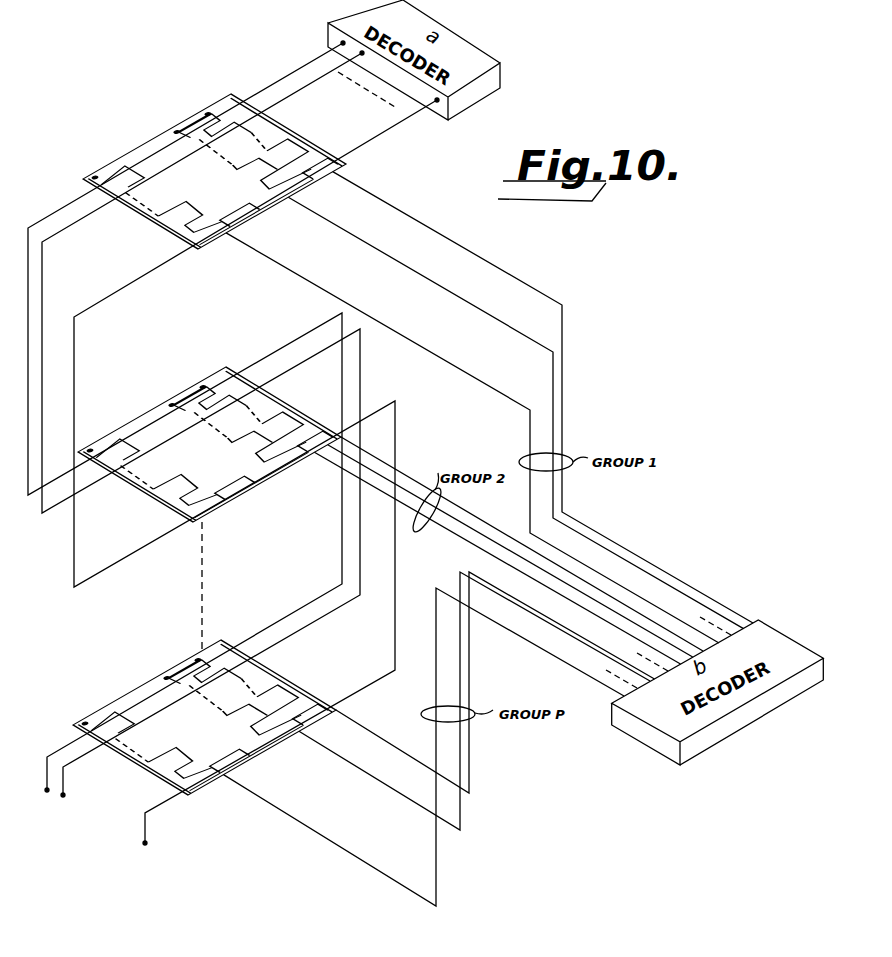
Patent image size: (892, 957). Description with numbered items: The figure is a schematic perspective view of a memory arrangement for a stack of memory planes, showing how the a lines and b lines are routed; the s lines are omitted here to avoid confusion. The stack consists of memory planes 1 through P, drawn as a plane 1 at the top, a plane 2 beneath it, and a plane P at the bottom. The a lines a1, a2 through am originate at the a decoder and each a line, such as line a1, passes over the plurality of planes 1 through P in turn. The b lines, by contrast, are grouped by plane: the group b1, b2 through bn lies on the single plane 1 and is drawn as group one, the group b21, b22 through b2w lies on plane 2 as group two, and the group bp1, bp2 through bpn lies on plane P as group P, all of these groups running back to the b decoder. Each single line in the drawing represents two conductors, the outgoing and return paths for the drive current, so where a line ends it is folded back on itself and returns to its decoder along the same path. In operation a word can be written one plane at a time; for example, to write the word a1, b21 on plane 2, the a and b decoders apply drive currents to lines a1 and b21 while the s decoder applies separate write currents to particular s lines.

The memory plane 1 is at (138, 155).
The memory plane 2 is at (142, 420).
The memory plane P is at (138, 688).
The a line a1 is at (326, 53).
The a line a2 is at (326, 80).
The a line am is at (390, 133).
The b line b1 is at (605, 547).
The b line b2 is at (632, 562).
The b line bn is at (655, 605).
The b line b21 is at (497, 534).
The b line b22 is at (450, 522).
The b line b2w is at (470, 550).
The b line bp1 is at (518, 603).
The b line bp2 is at (560, 633).
The b line bpn is at (598, 685).